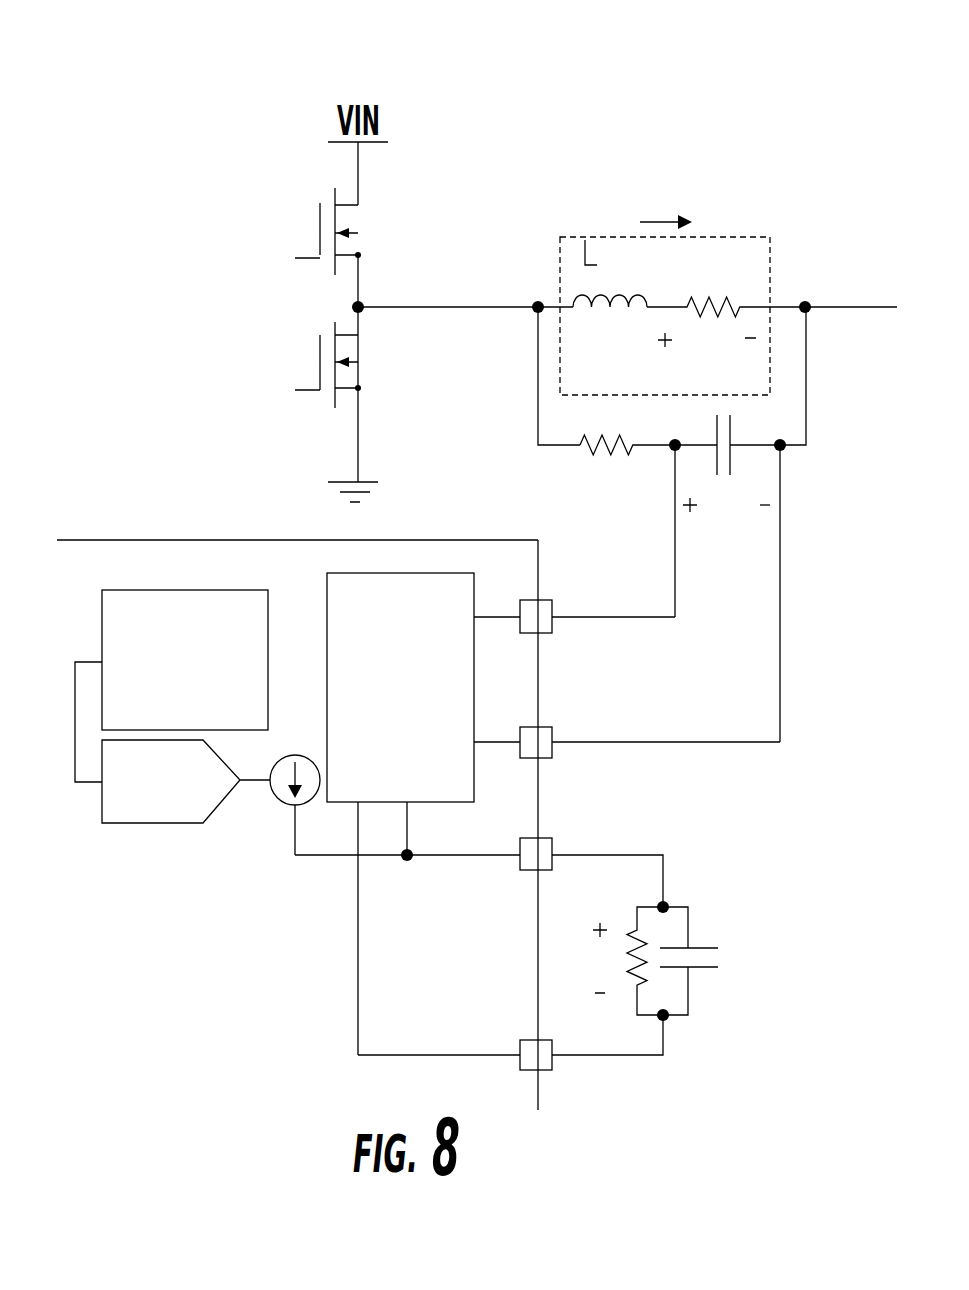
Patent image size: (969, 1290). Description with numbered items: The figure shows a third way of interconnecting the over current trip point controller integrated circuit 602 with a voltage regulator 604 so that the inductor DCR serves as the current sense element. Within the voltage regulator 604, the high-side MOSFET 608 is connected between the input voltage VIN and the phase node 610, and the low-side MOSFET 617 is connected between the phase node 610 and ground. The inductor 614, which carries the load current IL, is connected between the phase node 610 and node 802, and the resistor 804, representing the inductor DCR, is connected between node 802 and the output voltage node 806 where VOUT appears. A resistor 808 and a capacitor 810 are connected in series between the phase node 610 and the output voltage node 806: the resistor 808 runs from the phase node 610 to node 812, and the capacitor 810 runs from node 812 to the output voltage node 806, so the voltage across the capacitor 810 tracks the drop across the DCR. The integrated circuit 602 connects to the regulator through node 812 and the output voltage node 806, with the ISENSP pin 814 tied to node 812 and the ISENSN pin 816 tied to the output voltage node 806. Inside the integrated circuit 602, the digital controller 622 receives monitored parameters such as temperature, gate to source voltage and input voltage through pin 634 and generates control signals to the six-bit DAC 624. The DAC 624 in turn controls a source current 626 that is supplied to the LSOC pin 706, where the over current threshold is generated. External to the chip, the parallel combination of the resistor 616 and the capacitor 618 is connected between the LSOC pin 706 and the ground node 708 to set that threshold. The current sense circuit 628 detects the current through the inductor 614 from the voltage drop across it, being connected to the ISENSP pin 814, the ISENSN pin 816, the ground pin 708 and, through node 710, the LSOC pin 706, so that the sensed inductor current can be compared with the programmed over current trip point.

The integrated circuit 602 is at (182, 540).
The voltage regulator 604 is at (760, 135).
The high-side MOSFET 608 is at (318, 225).
The phase node 610 is at (354, 307).
The inductor 614 is at (648, 297).
The resistor 616 is at (645, 958).
The low-side MOSFET 617 is at (318, 365).
The capacitor 618 is at (705, 947).
The digital controller 622 is at (102, 632).
The 6-bit DAC 624 is at (108, 822).
The source current 626 is at (278, 800).
The current sense circuit 628 is at (327, 625).
The input pin 634 is at (228, 605).
The LSOC pin 706 is at (552, 840).
The ground pin 708 is at (548, 1072).
The node 710 is at (407, 862).
The node 802 is at (647, 320).
The resistor 804 is at (740, 305).
The output voltage node 806 is at (810, 312).
The resistor 808 is at (597, 457).
The capacitor 810 is at (733, 455).
The node 812 is at (683, 437).
The ISENSP pin 814 is at (552, 625).
The ISENSN pin 816 is at (545, 758).